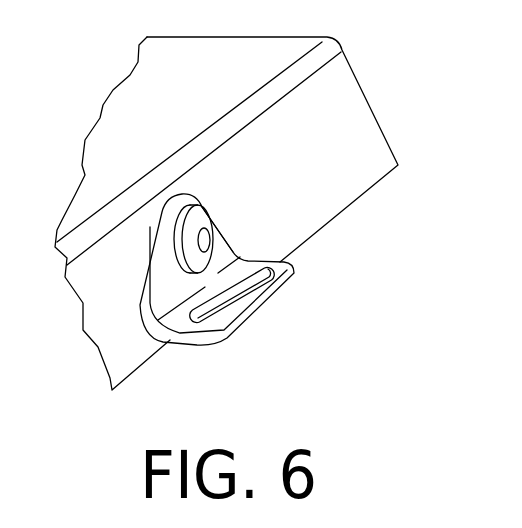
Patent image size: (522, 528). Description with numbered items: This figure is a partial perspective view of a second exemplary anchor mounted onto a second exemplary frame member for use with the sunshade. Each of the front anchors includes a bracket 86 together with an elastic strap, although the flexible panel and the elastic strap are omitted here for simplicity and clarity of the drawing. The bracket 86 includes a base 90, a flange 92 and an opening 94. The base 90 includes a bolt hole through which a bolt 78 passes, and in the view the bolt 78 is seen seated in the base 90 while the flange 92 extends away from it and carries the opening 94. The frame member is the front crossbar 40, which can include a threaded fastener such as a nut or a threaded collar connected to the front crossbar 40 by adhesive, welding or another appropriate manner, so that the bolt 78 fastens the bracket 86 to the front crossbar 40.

The front crossbar 40 is at (371, 108).
The bolt 78 is at (204, 208).
The bracket 86 is at (279, 327).
The base 90 is at (228, 235).
The flange 92 is at (188, 341).
The opening 94 is at (286, 262).